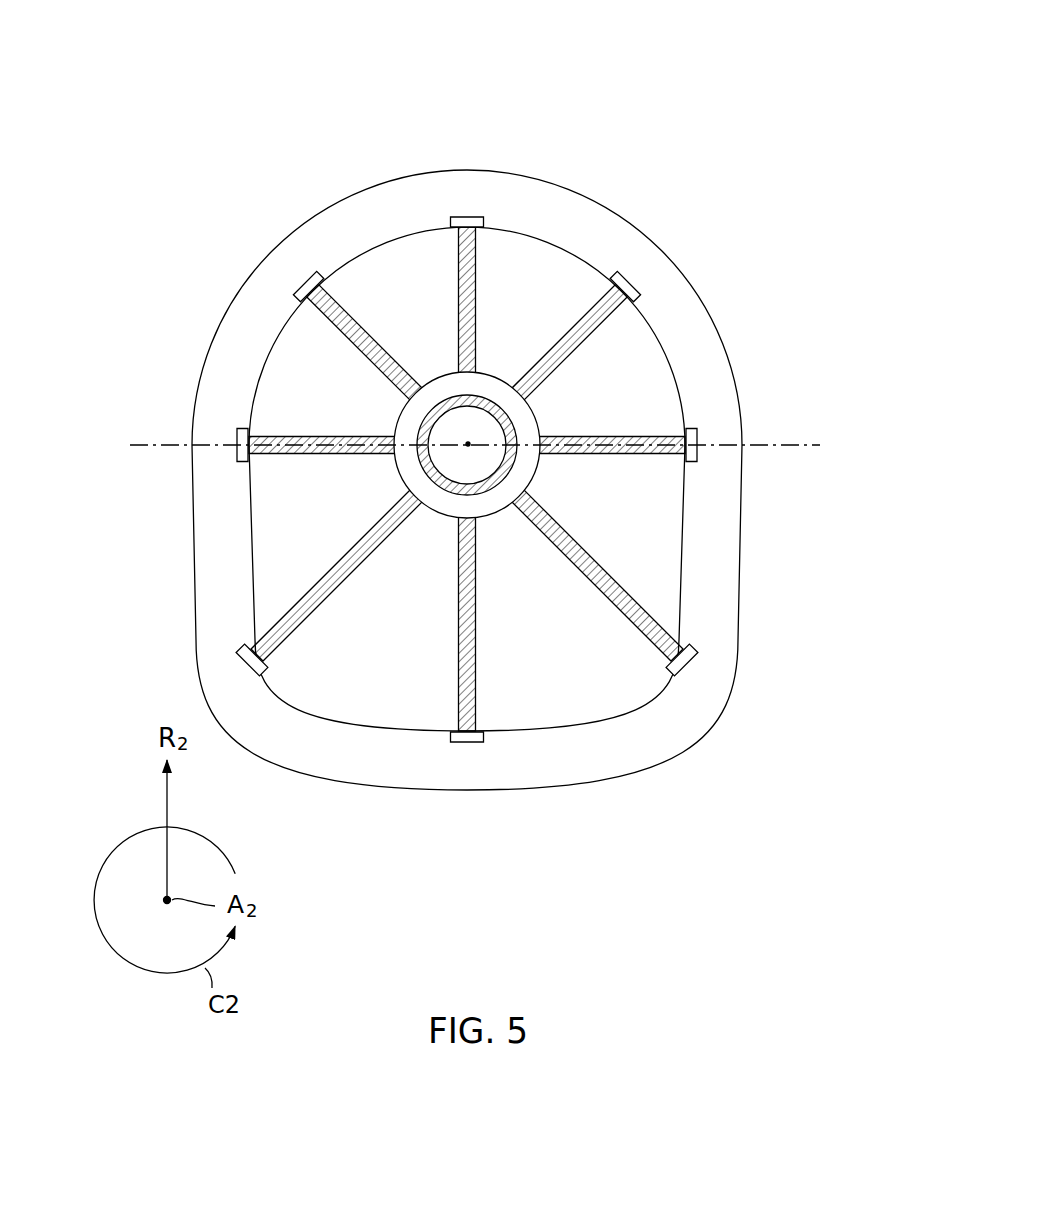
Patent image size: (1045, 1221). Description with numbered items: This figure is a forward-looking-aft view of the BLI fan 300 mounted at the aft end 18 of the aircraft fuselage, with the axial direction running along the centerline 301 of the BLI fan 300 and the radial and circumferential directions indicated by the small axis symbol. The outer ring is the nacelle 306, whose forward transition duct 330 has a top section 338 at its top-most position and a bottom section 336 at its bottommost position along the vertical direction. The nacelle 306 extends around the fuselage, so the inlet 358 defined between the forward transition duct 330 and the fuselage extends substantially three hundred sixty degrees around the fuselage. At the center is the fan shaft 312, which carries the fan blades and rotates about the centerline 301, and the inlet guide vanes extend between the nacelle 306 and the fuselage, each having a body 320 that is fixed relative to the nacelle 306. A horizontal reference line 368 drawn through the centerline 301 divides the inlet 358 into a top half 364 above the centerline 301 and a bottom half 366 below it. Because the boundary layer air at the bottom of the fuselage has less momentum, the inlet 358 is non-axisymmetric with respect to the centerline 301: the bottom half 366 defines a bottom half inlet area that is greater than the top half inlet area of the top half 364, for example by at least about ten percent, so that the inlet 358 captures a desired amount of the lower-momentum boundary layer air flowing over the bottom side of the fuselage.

The BLI fan 300 is at (470, 410).
The nacelle 306 is at (376, 197).
The body 320 is at (480, 280).
The fan shaft 312 is at (503, 402).
The centerline 301 is at (470, 443).
The aft end 18 is at (395, 420).
The horizontal reference line 368 is at (137, 441).
The forward transition duct 330 is at (437, 156).
The top section 338 is at (492, 156).
The inlet 358 is at (648, 392).
The top half 364 is at (292, 372).
The bottom half 366 is at (285, 543).
The bottom section 336 is at (511, 823).